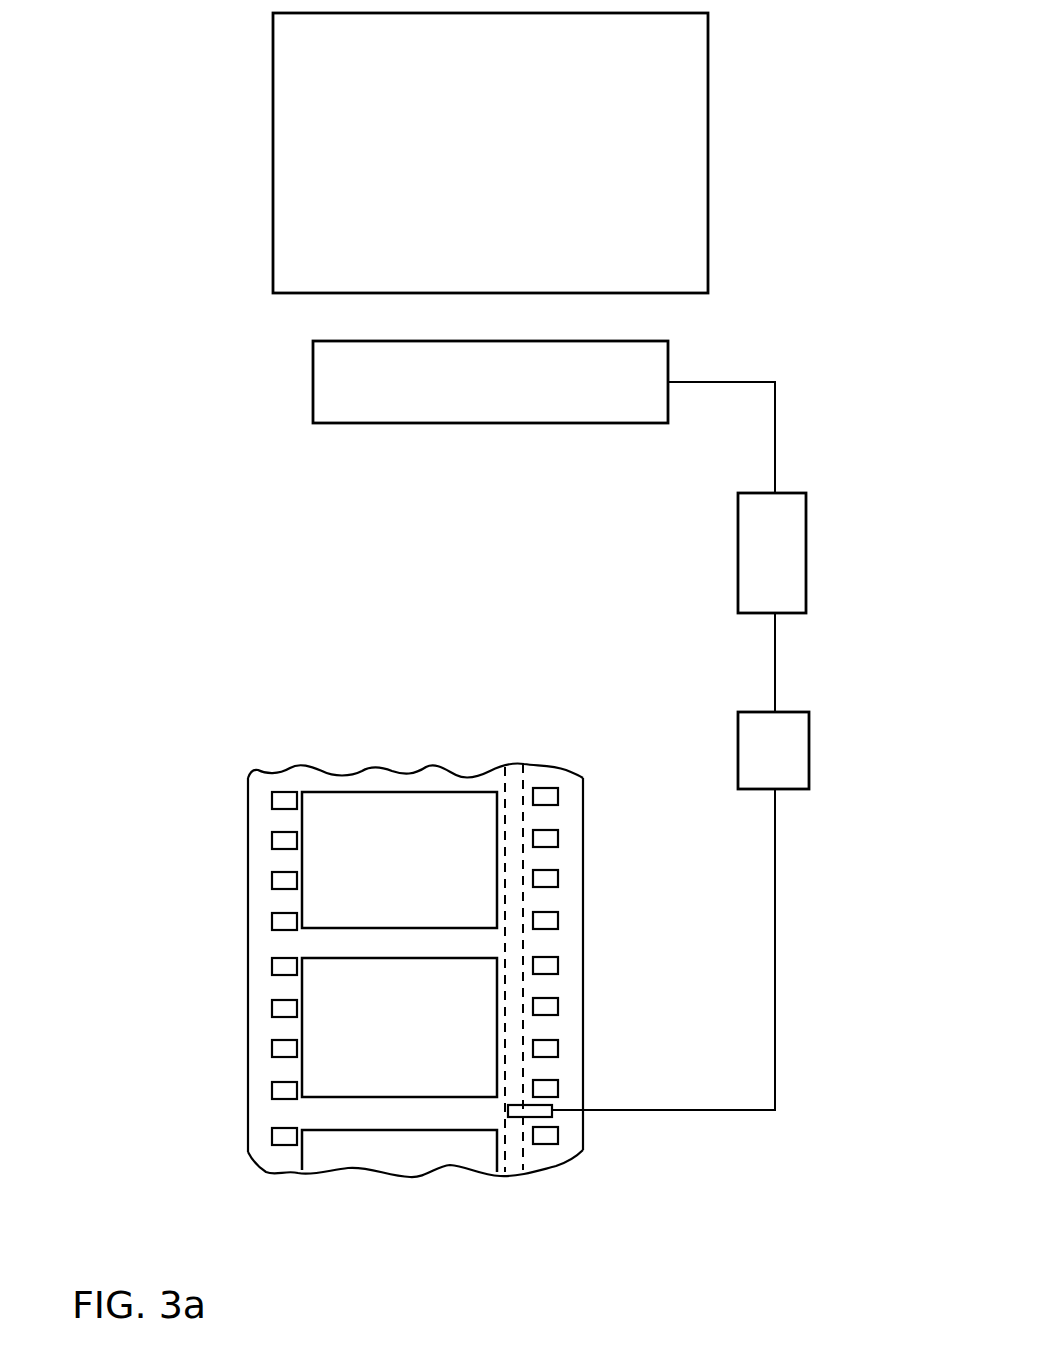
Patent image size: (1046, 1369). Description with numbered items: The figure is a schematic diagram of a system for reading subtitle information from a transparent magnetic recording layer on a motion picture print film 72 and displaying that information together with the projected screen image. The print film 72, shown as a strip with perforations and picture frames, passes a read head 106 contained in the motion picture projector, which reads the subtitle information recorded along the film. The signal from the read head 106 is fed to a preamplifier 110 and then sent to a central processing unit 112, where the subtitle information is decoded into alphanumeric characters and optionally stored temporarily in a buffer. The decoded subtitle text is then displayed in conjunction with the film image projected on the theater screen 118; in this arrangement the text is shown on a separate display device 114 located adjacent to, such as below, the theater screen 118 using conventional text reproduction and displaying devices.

The print film 72 is at (200, 753).
The read head 106 is at (552, 1107).
The preamplifier 110 is at (809, 771).
The central processing unit 112 is at (806, 593).
The display device 114 is at (313, 400).
The theater screen 118 is at (708, 255).